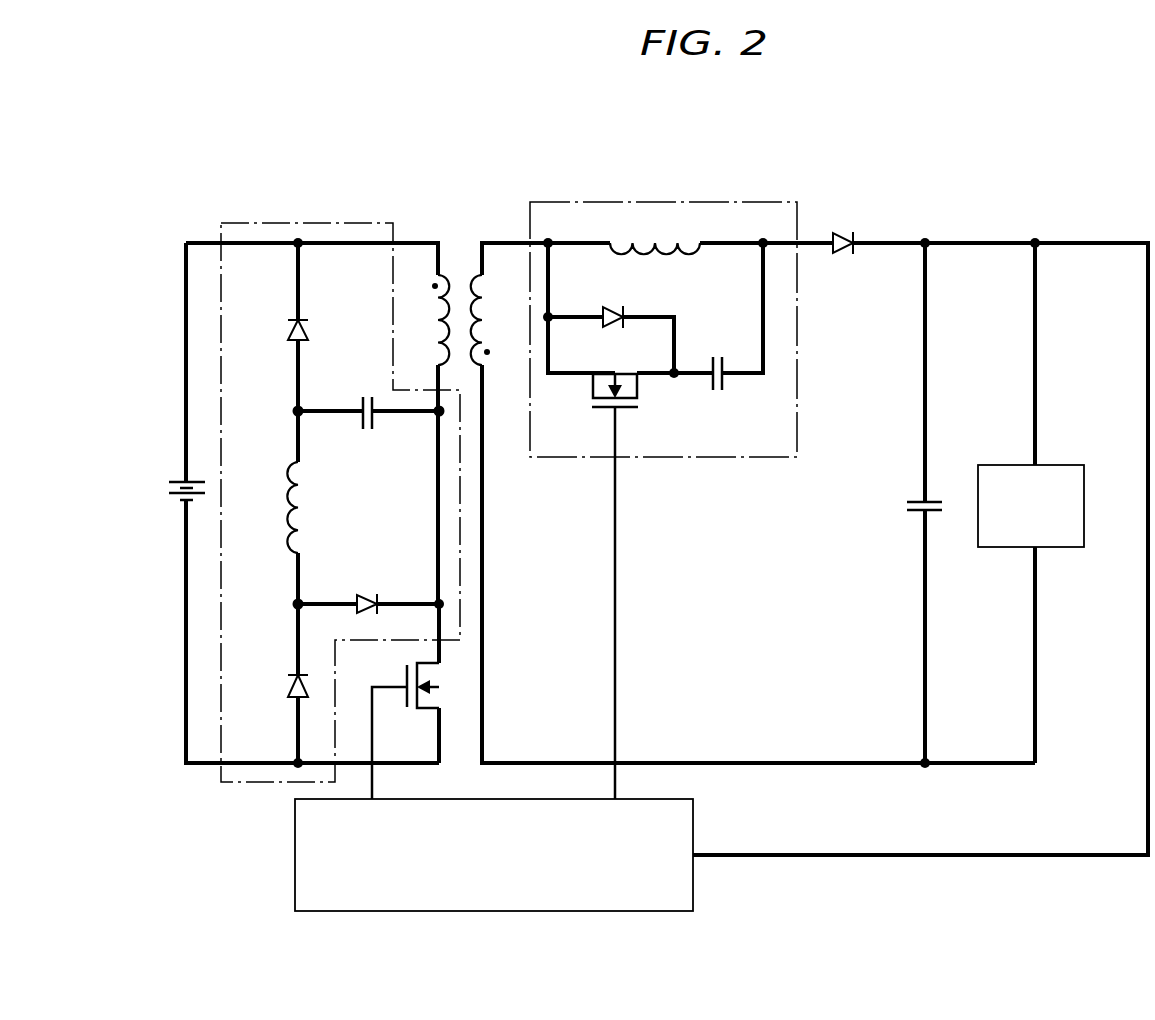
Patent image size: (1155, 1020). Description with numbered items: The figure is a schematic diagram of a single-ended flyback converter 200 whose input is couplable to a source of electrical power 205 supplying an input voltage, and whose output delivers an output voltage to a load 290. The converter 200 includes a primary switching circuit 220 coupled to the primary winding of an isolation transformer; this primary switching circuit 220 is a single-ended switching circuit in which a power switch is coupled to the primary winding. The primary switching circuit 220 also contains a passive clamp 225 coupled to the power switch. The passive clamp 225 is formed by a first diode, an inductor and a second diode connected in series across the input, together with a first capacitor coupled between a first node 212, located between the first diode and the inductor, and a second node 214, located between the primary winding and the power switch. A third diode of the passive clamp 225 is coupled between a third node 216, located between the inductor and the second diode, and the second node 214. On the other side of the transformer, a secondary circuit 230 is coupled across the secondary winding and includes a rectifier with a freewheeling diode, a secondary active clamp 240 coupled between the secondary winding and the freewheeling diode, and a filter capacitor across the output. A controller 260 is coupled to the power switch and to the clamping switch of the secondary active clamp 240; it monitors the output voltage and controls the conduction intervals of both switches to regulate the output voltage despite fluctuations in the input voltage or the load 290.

The single-ended flyback converter 200 is at (1108, 185).
The source of electrical power 205 is at (167, 491).
The first node 212 is at (296, 412).
The second node 214 is at (437, 413).
The third node 216 is at (296, 605).
The primary switching circuit 220 is at (183, 186).
The passive clamp 225 is at (246, 783).
The secondary circuit 230 is at (505, 186).
The secondary active clamp 240 is at (663, 500).
The controller 260 is at (494, 855).
The load 290 is at (1031, 506).